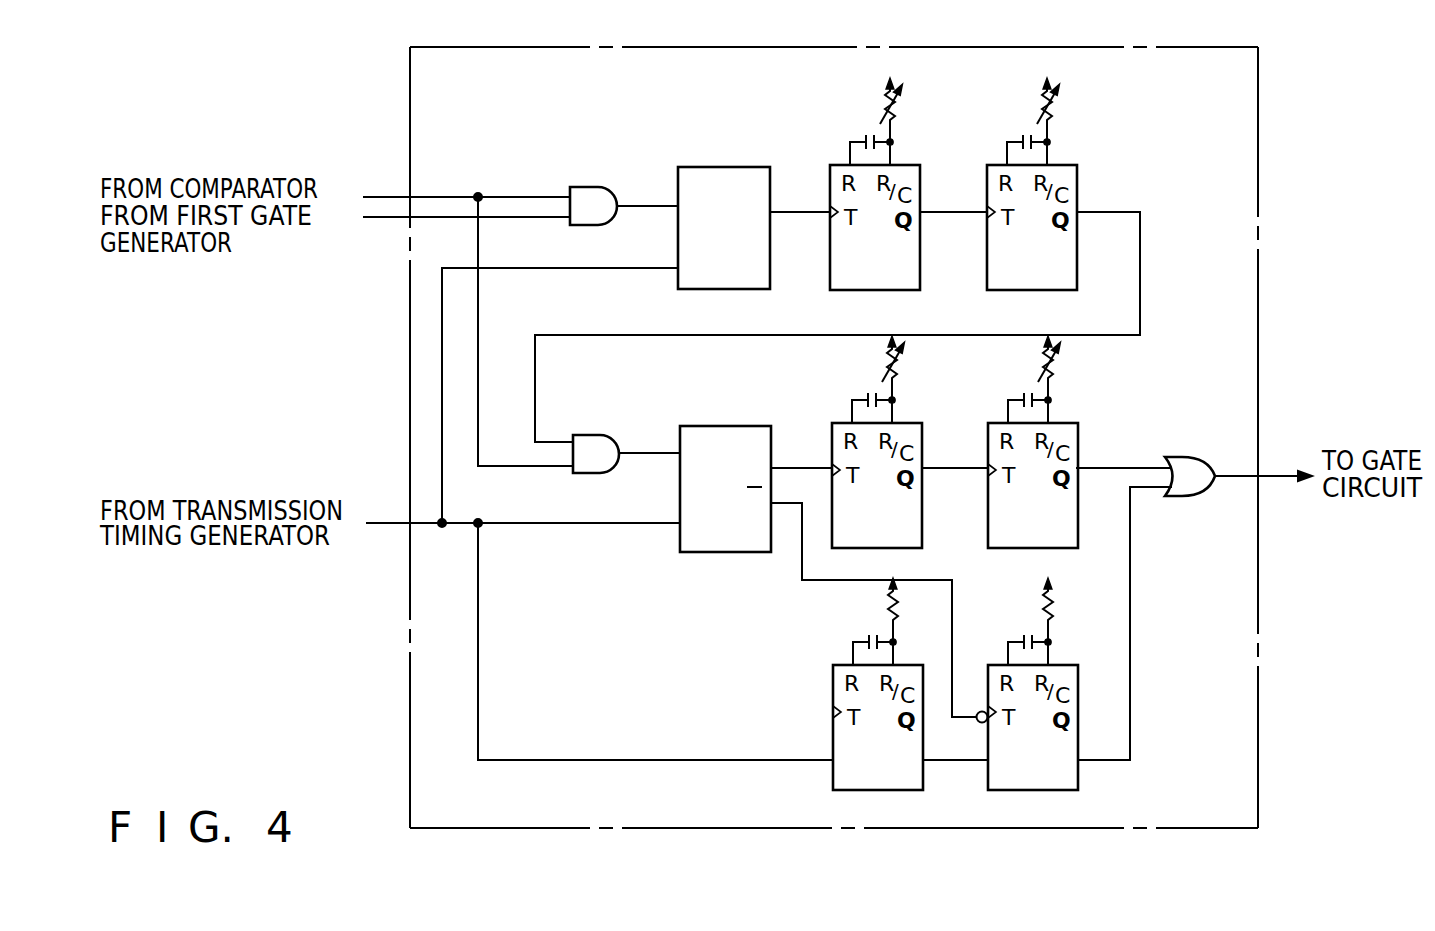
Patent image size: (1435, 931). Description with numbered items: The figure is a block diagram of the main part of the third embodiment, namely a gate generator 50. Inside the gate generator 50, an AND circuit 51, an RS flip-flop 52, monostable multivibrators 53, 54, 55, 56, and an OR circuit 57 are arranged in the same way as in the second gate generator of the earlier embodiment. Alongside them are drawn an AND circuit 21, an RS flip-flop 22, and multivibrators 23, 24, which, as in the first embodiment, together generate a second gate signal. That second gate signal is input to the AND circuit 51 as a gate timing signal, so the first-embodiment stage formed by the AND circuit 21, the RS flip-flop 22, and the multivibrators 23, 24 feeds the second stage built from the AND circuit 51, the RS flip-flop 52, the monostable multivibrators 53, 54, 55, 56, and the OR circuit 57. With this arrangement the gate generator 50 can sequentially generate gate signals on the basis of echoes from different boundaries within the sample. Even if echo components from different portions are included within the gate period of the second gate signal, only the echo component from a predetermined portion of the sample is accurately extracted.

The AND circuit 21 is at (591, 187).
The RS flip-flop 22 is at (718, 167).
The multivibrator 23 is at (915, 165).
The multivibrator 24 is at (1070, 165).
The gate generator 50 is at (829, 37).
The AND circuit 51 is at (589, 435).
The RS flip-flop 52 is at (720, 426).
The monostable multivibrator 53 is at (911, 423).
The monostable multivibrator 54 is at (1070, 423).
The monostable multivibrator 55 is at (833, 788).
The monostable multivibrator 56 is at (1077, 780).
The OR circuit 57 is at (1177, 457).